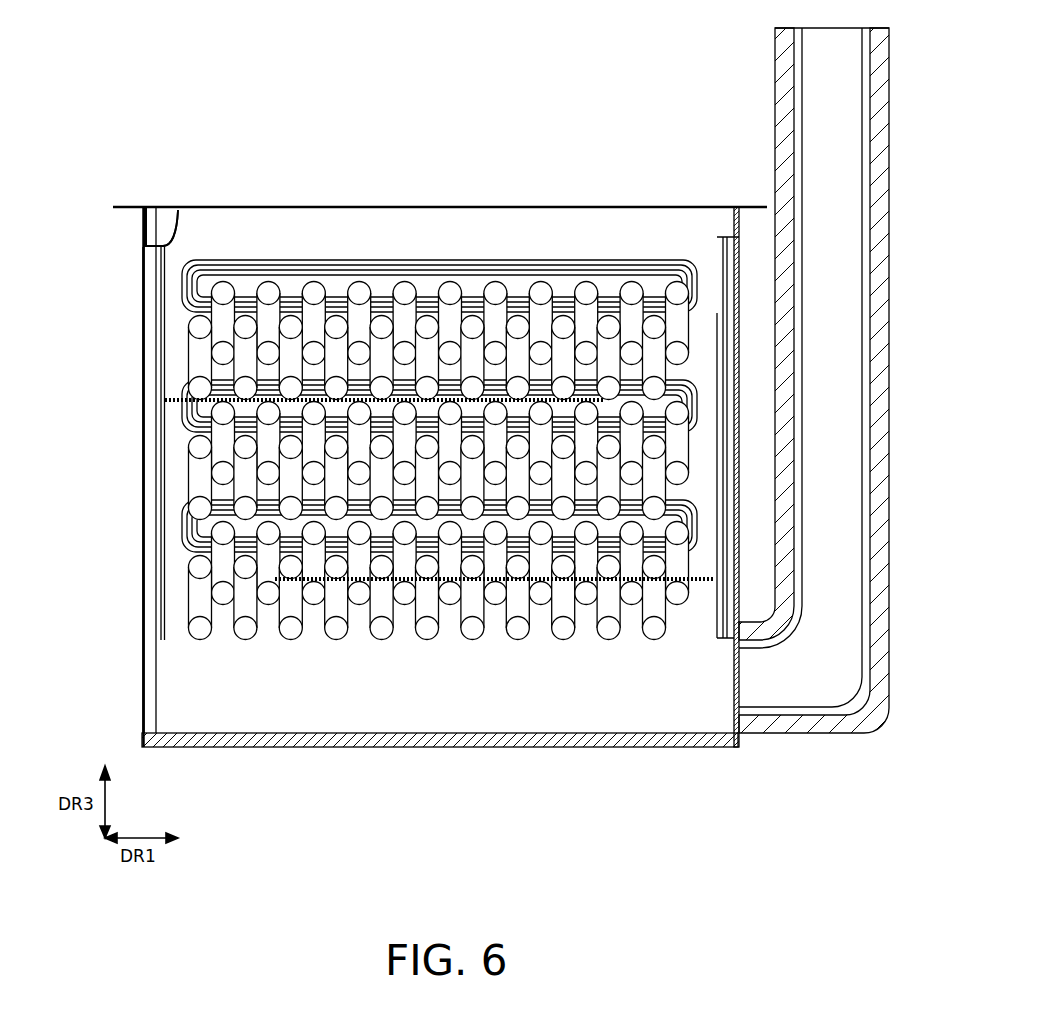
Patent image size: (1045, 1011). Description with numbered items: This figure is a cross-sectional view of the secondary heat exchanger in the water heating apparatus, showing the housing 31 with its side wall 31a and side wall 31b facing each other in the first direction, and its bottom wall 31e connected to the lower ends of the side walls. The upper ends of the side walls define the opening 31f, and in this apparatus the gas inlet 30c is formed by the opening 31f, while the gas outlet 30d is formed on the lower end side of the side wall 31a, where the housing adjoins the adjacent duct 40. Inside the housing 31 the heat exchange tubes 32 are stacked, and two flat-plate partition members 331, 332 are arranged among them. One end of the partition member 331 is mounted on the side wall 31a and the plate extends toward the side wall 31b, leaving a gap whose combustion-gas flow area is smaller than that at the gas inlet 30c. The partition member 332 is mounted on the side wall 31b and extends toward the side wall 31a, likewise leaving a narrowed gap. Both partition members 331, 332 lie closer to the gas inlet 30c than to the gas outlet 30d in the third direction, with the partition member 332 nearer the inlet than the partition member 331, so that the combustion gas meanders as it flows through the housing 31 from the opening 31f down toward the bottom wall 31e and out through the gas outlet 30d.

The duct 40 is at (790, 48).
The housing 31 is at (272, 750).
The side wall 31a is at (717, 313).
The side wall 31b is at (142, 703).
The bottom wall 31e is at (520, 747).
The opening 31f is at (178, 210).
The gas inlet 30c is at (201, 188).
The gas outlet 30d is at (740, 682).
The heat exchange tube 32 is at (219, 470).
The partition member 331 is at (437, 583).
The partition member 332 is at (398, 396).